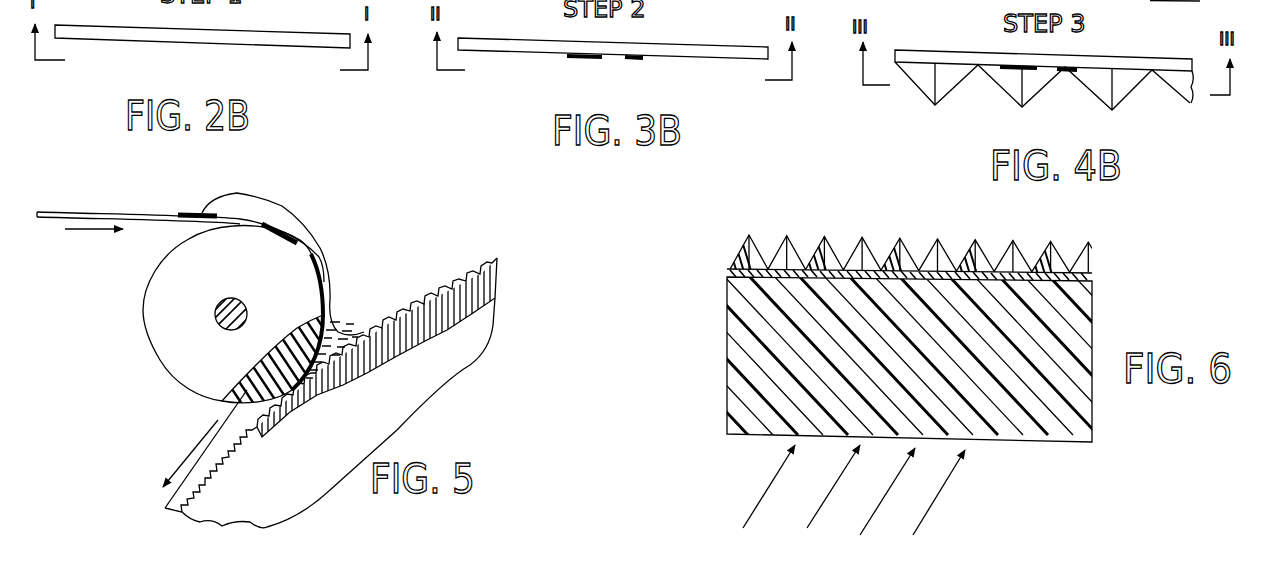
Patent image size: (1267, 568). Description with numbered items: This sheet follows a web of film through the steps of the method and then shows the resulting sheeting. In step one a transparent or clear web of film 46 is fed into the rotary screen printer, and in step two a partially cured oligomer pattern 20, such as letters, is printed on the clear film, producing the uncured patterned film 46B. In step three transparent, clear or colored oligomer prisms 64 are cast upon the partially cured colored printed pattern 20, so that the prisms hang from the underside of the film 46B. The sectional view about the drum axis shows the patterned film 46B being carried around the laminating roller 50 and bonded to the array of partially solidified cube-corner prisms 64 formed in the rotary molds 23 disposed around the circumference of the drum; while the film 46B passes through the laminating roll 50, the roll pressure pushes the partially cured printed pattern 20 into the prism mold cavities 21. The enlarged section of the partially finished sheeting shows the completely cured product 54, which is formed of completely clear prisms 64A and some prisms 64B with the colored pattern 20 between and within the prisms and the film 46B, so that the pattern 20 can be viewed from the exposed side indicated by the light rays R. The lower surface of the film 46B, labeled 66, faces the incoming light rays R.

In FIG. 2B, the web of film 46 is at (270, 46).
In FIG. 3B, the uncured patterned film 46B is at (743, 60).
In FIG. 4B, the uncured patterned film 46B is at (1195, 62).
In FIG. 5, the uncured patterned film 46B is at (72, 211).
In FIG. 6, the uncured patterned film 46B is at (1093, 413).
In FIG. 3B, the pattern 20 is at (585, 59).
In FIG. 4B, the pattern 20 is at (1025, 71).
In FIG. 5, the pattern 20 is at (278, 225).
In FIG. 6, the pattern 20 is at (864, 270).
In FIG. 4B, the cube-corner prisms 64 is at (1128, 98).
In FIG. 5, the cube-corner prisms 64 is at (333, 328).
In FIG. 4B, the prisms with colored pattern 64B is at (1007, 93).
In FIG. 6, the prisms with colored pattern 64B is at (943, 248).
In FIG. 6, the completely clear prisms 64A is at (1045, 243).
In FIG. 5, the laminating roller 50 is at (225, 279).
In FIG. 5, the prism mold cavities 21 is at (412, 296).
In FIG. 5, the rotary molds 23 is at (498, 285).
In FIG. 6, the completely cured product 54 is at (1101, 302).
In FIG. 6, the bottom surface of substrate 66 is at (740, 436).
In FIG. 6, the light rays R is at (935, 500).